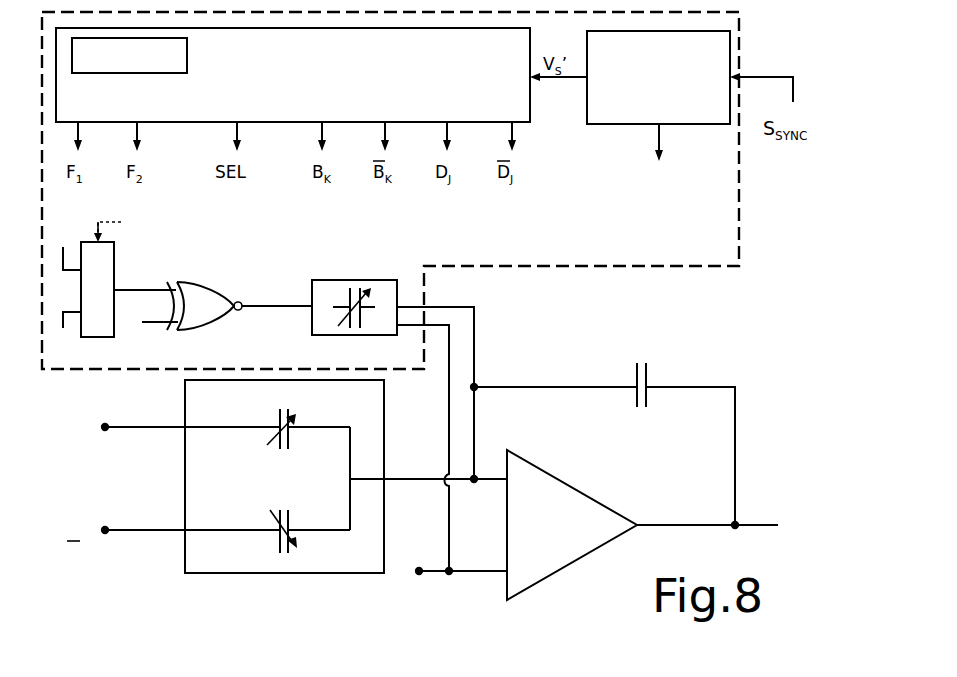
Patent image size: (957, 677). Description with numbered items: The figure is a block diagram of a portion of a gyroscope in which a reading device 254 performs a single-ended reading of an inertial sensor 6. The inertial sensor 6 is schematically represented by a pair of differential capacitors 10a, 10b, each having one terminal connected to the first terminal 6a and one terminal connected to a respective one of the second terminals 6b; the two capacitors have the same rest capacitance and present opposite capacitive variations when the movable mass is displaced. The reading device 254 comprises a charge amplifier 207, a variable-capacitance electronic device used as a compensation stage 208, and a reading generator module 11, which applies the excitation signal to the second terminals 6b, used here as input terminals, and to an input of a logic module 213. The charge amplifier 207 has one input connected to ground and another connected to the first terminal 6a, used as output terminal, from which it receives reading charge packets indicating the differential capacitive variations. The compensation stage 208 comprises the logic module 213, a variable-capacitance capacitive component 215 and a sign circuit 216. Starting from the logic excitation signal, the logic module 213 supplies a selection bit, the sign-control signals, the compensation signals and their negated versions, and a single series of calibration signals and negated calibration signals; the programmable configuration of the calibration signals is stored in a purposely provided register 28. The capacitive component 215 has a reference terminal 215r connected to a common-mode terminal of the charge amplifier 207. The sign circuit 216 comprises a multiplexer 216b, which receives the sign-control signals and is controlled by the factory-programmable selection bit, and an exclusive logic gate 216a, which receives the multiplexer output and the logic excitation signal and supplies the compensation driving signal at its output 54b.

The register 28 is at (72, 55).
The logic module 213 is at (531, 100).
The reading generator module 11 is at (688, 124).
The multiplexer 216b is at (114, 267).
The sign circuit 216 is at (213, 290).
The exclusive logic gate 216a is at (210, 321).
The variable-capacitance capacitive component 215 is at (360, 280).
The compensation stage 208 is at (530, 266).
The inertial sensor 6 is at (185, 548).
The second terminals 6b is at (105, 431).
The first terminal 6a is at (476, 477).
The differential capacitor 10a is at (298, 416).
The differential capacitor 10b is at (270, 510).
The reading device 254 is at (772, 372).
The charge amplifier 207 is at (640, 350).
The reference terminal 215r is at (449, 575).
The output 54b is at (734, 537).